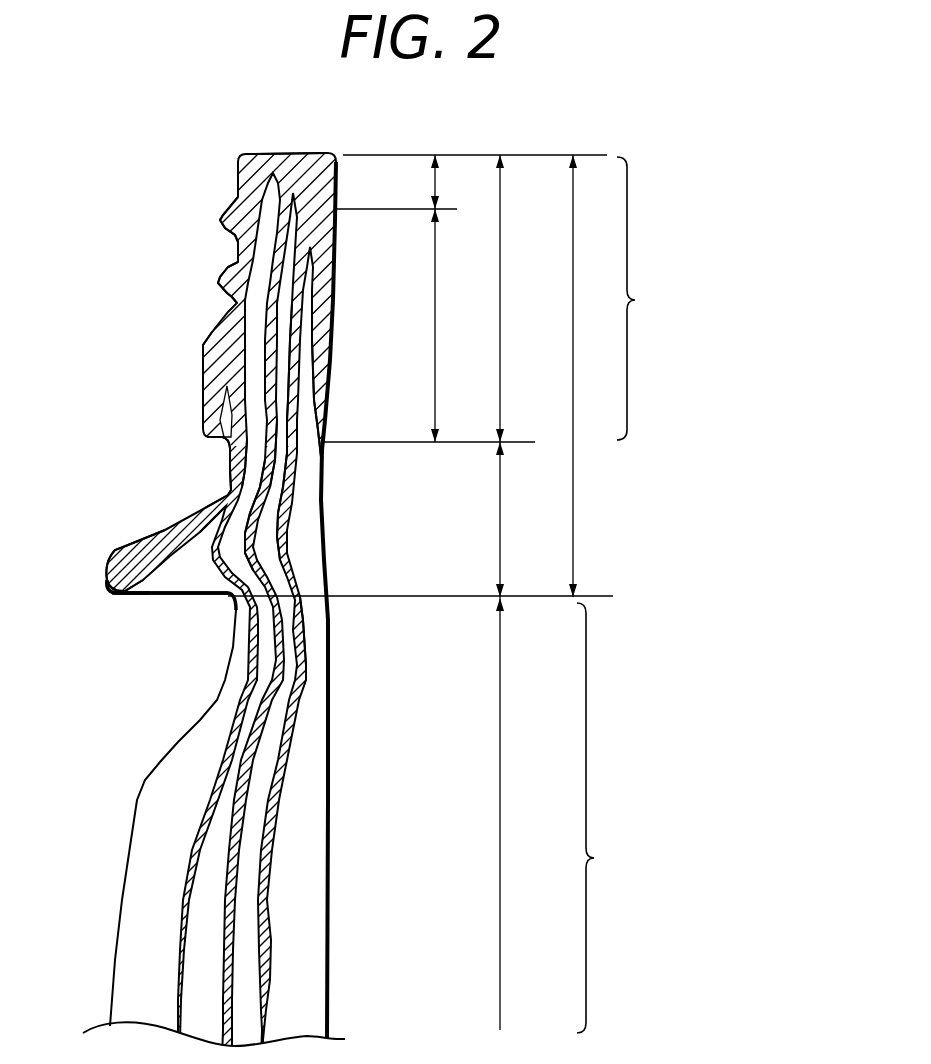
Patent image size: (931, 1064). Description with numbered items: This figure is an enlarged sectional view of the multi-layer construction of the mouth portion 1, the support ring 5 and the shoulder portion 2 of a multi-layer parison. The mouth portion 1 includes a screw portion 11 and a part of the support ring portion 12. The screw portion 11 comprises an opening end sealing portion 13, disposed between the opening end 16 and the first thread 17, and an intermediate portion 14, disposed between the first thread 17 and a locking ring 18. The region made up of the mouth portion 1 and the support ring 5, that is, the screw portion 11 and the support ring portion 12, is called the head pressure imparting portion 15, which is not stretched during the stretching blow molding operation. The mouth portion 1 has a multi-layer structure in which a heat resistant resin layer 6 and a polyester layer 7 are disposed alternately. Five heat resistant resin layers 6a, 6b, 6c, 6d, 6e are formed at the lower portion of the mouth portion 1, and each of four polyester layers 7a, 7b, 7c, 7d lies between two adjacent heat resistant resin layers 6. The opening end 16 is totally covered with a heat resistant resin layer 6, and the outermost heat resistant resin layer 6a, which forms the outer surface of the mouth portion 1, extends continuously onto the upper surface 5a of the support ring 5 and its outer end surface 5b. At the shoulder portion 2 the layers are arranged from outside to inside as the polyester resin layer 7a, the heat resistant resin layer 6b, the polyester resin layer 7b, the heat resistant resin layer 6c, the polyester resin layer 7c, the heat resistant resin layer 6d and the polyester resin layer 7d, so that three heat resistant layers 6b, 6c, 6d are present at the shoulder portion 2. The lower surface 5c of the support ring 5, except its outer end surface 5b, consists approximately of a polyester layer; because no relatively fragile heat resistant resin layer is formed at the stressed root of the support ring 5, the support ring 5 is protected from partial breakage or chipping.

The mouth portion 1 is at (635, 298).
The shoulder portion 2 is at (349, 824).
The support ring 5 is at (90, 567).
The upper surface of the support ring 5a is at (125, 546).
The outer end surface of the support ring 5b is at (106, 586).
The lower surface of the support ring 5c is at (182, 598).
The heat resistant resin layer 6 is at (331, 180).
The heat resistant resin layer 6a is at (222, 438).
The heat resistant resin layer 6b is at (237, 472).
The heat resistant resin layer 6c is at (278, 456).
The heat resistant resin layer 6d is at (292, 410).
The heat resistant resin layer 6e is at (323, 350).
The polyester layer 7 is at (256, 269).
The polyester resin layer 7a is at (223, 503).
The polyester resin layer 7b is at (255, 485).
The polyester resin layer 7c is at (275, 510).
The polyester resin layer 7d is at (307, 553).
The screw portion 11 is at (502, 300).
The support ring portion 12 is at (502, 525).
The opening end sealing portion 13 is at (437, 178).
The intermediate portion 14 is at (437, 300).
The head pressure imparting portion 15 is at (575, 518).
The opening end 16 is at (258, 152).
The first thread 17 is at (221, 218).
The locking ring 18 is at (203, 373).